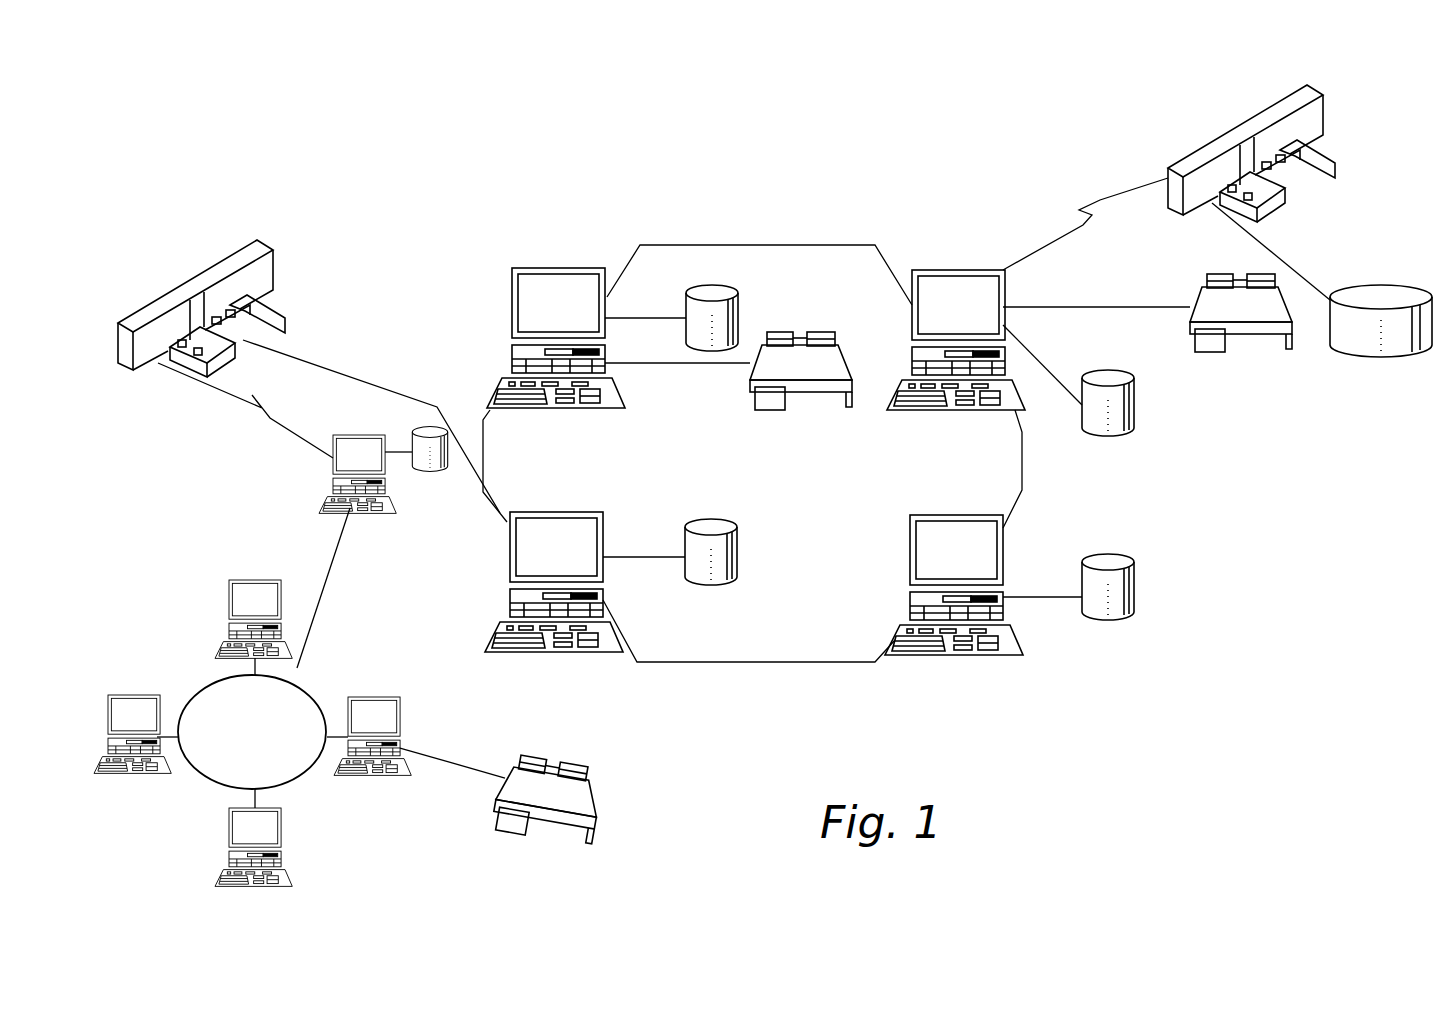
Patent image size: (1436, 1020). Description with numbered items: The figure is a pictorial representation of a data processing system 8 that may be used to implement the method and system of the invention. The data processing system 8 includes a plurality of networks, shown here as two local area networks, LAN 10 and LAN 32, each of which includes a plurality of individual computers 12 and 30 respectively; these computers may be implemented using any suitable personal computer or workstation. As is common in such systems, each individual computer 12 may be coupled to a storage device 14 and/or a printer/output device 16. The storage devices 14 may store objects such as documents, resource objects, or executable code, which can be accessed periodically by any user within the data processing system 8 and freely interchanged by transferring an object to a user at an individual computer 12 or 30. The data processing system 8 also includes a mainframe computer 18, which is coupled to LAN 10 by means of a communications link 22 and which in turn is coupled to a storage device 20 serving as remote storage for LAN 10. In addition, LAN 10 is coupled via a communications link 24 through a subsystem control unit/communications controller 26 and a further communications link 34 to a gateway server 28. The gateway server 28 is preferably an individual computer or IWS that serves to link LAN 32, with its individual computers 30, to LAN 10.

The data processing system 8 is at (790, 208).
The local area network 10 is at (776, 665).
The individual computer 12 is at (578, 268).
The storage device 14 is at (739, 308).
The printer/output device 16 is at (799, 343).
The mainframe computer 18 is at (1247, 123).
The storage device 20 is at (1400, 288).
The communications link 22 is at (1111, 193).
The communications link 24 is at (363, 380).
The subsystem control unit/communications controller 26 is at (274, 238).
The gateway server 28 is at (358, 435).
The individual computer 30 is at (266, 580).
The local area network 32 is at (194, 782).
The communications link 34 is at (280, 416).